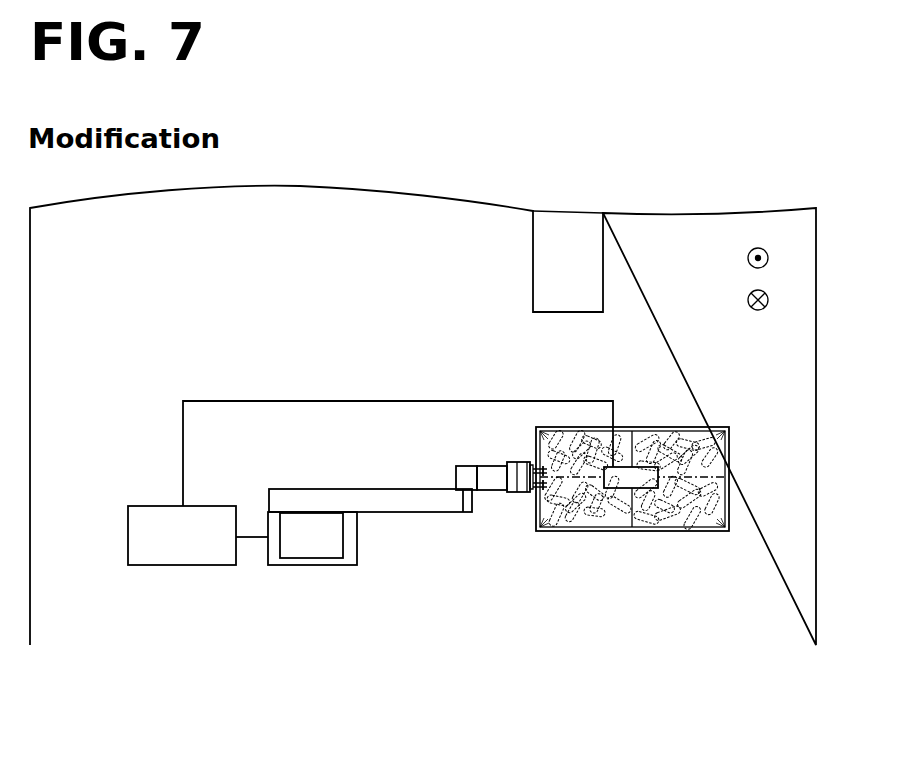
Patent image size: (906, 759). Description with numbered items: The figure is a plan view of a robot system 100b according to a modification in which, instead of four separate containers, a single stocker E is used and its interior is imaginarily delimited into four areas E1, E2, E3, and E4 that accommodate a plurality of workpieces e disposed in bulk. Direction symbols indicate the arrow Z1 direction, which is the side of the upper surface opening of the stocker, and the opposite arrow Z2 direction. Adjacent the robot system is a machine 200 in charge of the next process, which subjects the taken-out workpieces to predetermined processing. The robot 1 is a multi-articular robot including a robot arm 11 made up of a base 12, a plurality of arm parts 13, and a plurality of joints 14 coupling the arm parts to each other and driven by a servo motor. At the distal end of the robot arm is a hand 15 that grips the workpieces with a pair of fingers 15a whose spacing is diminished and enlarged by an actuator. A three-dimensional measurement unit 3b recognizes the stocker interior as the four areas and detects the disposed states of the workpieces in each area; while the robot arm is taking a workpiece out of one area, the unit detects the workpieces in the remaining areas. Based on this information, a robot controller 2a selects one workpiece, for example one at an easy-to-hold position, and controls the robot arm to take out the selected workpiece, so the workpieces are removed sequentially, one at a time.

The robot system 100b is at (191, 374).
The machine in charge of the next process 200 is at (603, 268).
The robot controller 2a is at (128, 537).
The robot 1 is at (411, 554).
The robot arm 11 is at (424, 503).
The base 12 is at (312, 563).
The arm parts 13 is at (372, 509).
The joints 14 is at (465, 470).
The hand 15 is at (521, 462).
The fingers 15a is at (535, 491).
The three-dimensional measurement unit 3b is at (633, 482).
The stocker E is at (727, 477).
The workpieces e is at (716, 457).
The area E1 is at (549, 528).
The area E2 is at (716, 528).
The area E3 is at (549, 431).
The area E4 is at (716, 431).
The arrow Z1 direction Z1 is at (774, 258).
The arrow Z2 direction Z2 is at (774, 300).